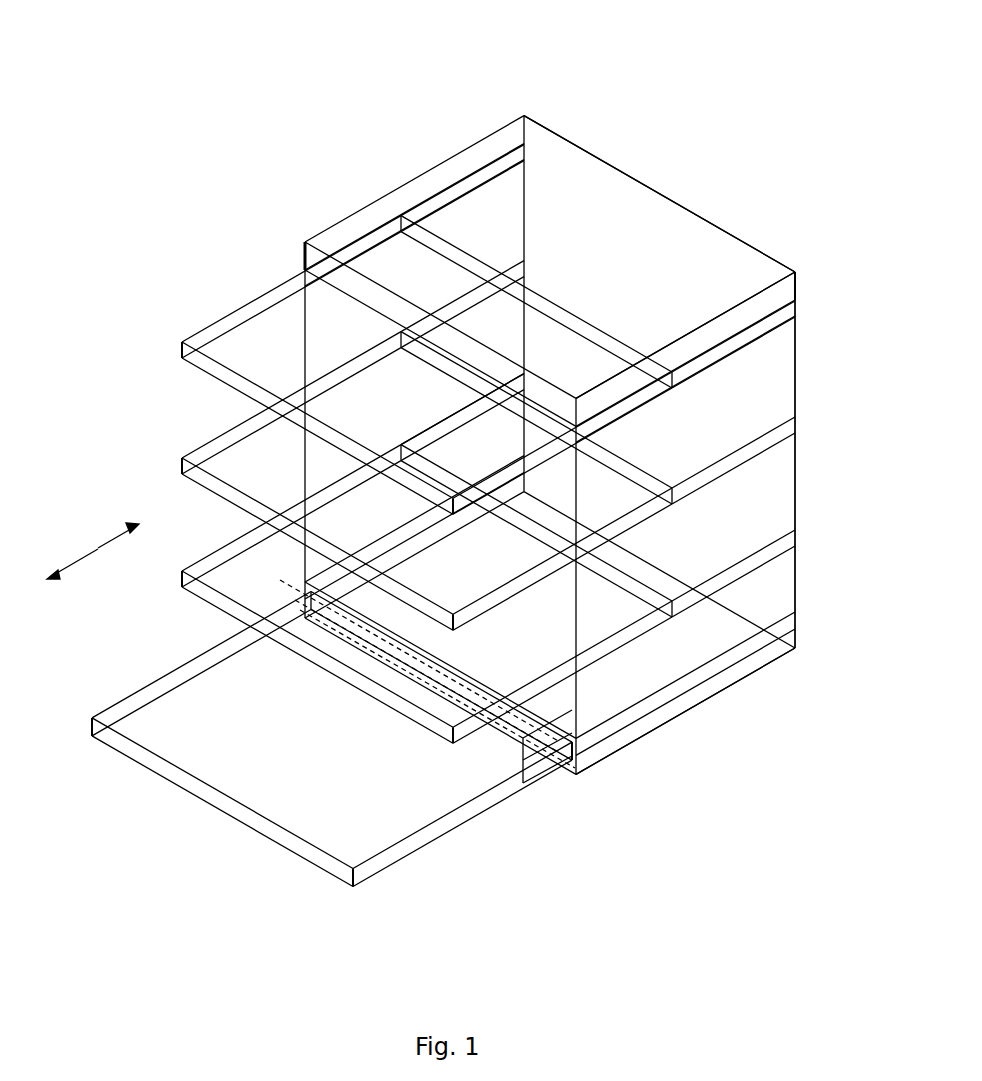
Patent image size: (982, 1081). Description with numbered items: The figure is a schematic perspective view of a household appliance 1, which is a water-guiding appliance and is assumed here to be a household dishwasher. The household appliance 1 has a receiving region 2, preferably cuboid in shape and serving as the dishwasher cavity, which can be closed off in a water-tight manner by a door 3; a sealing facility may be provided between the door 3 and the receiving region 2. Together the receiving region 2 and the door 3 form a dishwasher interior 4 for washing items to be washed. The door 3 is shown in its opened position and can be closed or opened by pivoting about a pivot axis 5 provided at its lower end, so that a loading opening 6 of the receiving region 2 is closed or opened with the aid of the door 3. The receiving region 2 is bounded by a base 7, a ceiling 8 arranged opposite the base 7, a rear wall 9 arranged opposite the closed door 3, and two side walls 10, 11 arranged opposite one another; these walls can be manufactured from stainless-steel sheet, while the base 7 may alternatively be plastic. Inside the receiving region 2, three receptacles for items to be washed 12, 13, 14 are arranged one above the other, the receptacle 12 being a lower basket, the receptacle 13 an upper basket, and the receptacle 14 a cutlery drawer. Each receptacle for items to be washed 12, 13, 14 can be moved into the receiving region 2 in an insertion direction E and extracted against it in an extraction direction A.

The household appliance 1 is at (345, 113).
The receiving region 2 is at (335, 216).
The door 3 is at (180, 690).
The dishwasher interior 4 is at (565, 503).
The pivot axis 5 is at (590, 772).
The loading opening 6 is at (553, 702).
The base 7 is at (722, 640).
The ceiling 8 is at (578, 165).
The rear wall 9 is at (700, 220).
The side wall 10 is at (430, 200).
The side wall 11 is at (770, 396).
The receptacle for items to be washed 12 is at (215, 570).
The receptacle for items to be washed 13 is at (215, 456).
The receptacle for items to be washed 14 is at (255, 318).